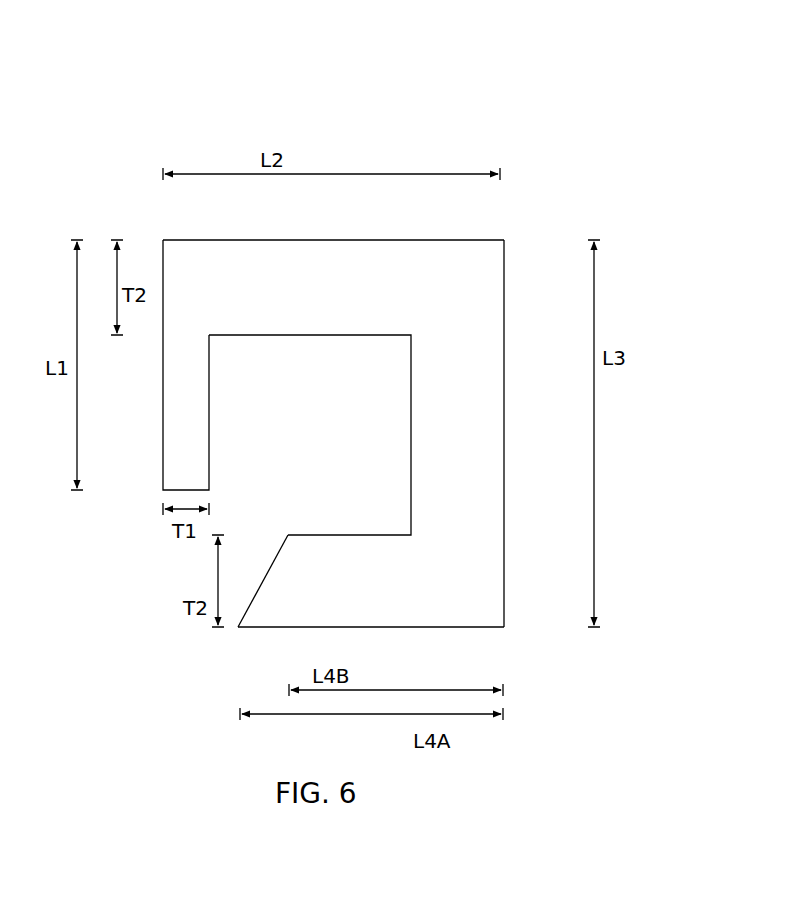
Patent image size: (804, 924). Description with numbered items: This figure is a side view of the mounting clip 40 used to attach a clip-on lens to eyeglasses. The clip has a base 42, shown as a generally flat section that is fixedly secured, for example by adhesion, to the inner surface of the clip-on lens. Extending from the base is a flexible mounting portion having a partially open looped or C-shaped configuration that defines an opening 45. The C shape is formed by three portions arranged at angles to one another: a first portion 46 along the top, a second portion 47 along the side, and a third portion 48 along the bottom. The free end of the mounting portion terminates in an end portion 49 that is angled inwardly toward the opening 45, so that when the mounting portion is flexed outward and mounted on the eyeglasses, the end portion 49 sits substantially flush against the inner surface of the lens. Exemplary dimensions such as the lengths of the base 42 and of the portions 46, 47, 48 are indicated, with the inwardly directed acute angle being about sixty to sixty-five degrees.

The mounting clip 40 is at (300, 346).
The base 42 is at (163, 420).
The opening 45 is at (187, 570).
The first portion 46 is at (327, 240).
The second portion 47 is at (504, 380).
The third portion 48 is at (412, 627).
The end portion 49 is at (269, 570).